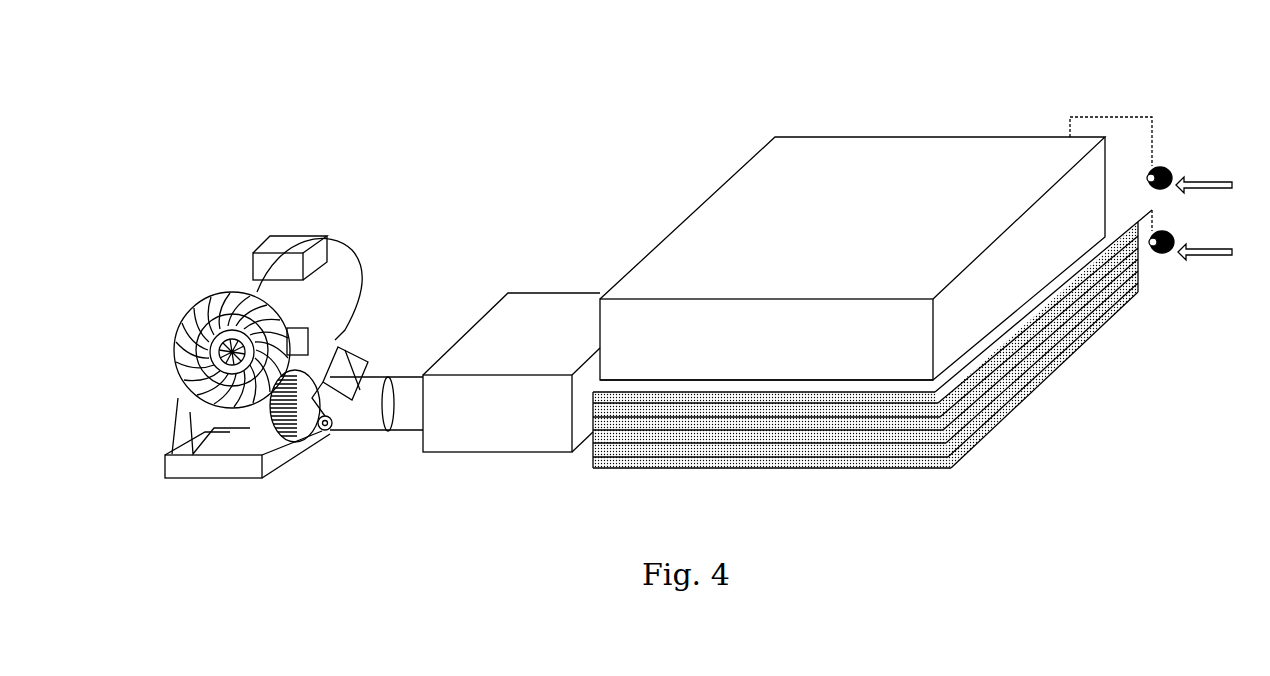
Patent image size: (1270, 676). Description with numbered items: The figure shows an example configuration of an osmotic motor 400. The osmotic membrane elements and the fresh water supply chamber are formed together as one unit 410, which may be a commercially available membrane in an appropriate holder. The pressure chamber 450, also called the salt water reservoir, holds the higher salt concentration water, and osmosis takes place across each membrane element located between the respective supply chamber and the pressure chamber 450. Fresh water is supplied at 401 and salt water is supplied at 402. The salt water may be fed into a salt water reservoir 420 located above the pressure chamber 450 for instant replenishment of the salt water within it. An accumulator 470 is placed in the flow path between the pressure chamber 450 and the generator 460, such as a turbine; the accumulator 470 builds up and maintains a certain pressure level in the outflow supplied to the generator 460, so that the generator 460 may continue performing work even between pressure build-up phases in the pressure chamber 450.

The osmotic motor 400 is at (648, 165).
The fresh water supply 401 is at (1195, 247).
The salt water supply 402 is at (1151, 155).
The osmotic membrane element and fresh water supply chamber unit 410 is at (1023, 320).
The salt water reservoir 420 is at (841, 187).
The pressure chamber 450 is at (928, 390).
The generator 460 is at (218, 305).
The accumulator 470 is at (473, 435).